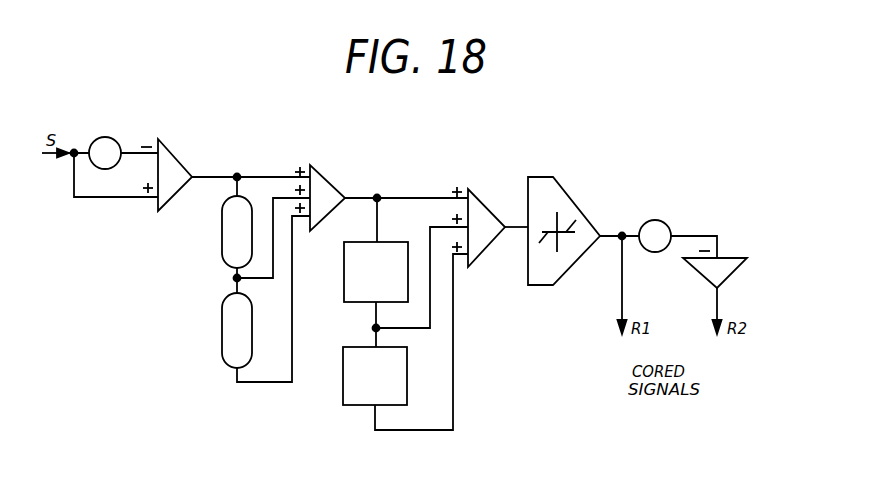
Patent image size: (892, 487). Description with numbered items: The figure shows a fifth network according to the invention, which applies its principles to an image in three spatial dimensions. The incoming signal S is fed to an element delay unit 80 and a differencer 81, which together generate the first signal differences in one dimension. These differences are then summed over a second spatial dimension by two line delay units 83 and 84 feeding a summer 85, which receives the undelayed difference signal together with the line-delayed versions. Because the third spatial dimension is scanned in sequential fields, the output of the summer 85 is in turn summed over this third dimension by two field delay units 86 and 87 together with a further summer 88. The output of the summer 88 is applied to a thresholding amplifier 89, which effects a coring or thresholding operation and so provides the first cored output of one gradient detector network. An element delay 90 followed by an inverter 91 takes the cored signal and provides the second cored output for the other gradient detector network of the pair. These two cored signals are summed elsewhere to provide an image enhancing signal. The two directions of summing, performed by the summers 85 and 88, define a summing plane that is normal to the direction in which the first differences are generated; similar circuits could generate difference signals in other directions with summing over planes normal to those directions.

The element delay unit 80 is at (111, 169).
The differencer 81 is at (152, 198).
The line delay unit 83 is at (221, 221).
The line delay unit 84 is at (214, 329).
The summer 85 is at (340, 173).
The field delay unit 86 is at (344, 267).
The field delay unit 87 is at (339, 367).
The summer 88 is at (488, 213).
The amplifier 89 is at (588, 215).
The element delay 90 is at (667, 228).
The inverter 91 is at (730, 255).